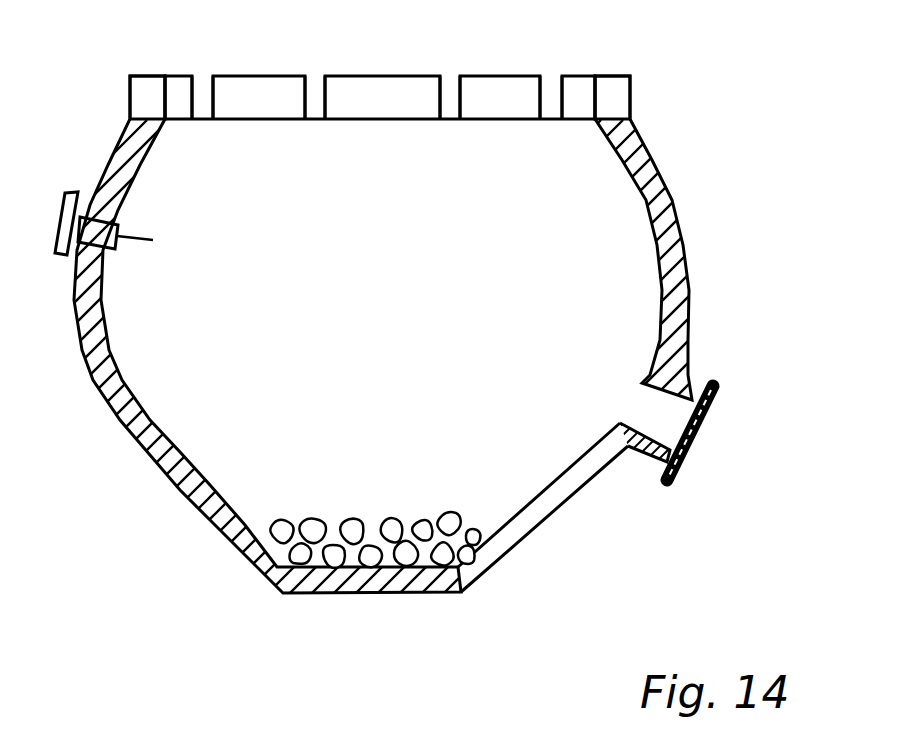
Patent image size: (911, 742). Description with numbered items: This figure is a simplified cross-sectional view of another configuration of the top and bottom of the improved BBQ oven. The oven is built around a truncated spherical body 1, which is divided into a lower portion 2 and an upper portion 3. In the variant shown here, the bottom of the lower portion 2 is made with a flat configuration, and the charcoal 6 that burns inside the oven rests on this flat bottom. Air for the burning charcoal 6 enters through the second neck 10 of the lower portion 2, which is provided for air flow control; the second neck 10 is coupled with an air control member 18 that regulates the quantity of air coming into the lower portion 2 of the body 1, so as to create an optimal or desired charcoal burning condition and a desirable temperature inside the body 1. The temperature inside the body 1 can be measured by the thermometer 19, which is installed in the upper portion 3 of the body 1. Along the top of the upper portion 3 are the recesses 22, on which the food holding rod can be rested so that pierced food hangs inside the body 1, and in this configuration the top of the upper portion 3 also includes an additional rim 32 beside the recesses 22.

The truncated spherical body 1 is at (675, 197).
The lower portion 2 is at (136, 487).
The upper portion 3 is at (676, 153).
The charcoal 6 is at (440, 503).
The second neck 10 is at (642, 462).
The air control member 18 is at (713, 382).
The thermometer 19 is at (117, 221).
The recesses 22 is at (204, 97).
The additional rim 32 is at (130, 96).